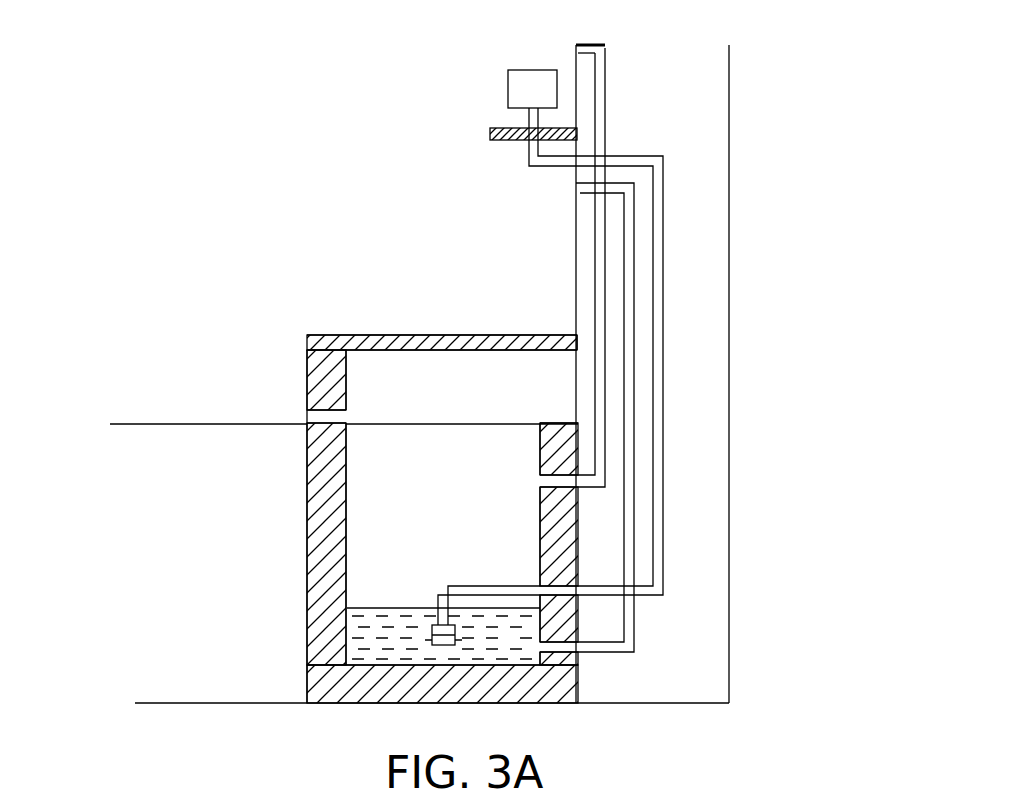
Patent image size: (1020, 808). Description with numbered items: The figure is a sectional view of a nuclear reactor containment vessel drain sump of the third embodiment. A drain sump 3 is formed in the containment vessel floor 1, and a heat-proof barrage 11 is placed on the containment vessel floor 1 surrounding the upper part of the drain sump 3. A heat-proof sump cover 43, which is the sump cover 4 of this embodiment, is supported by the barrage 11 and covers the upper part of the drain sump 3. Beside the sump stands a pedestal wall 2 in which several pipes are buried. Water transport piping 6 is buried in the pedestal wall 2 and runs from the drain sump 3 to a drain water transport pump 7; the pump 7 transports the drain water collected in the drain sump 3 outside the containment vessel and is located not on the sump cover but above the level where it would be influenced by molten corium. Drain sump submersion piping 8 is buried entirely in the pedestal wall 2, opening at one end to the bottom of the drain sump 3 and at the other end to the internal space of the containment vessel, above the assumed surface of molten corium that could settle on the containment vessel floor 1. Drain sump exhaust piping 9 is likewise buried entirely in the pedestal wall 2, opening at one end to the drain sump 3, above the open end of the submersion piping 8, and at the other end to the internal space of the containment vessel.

The containment vessel floor 1 is at (143, 477).
The pedestal wall 2 is at (728, 396).
The drain sump 3 is at (377, 505).
The sump cover 4 is at (443, 335).
The heat-proof sump cover 43 is at (442, 313).
The water transport piping 6 is at (663, 338).
The drain water transport pump 7 is at (527, 70).
The drain sump submersion piping 8 is at (632, 642).
The drain sump exhaust piping 9 is at (607, 48).
The heat-proof barrage 11 is at (307, 352).